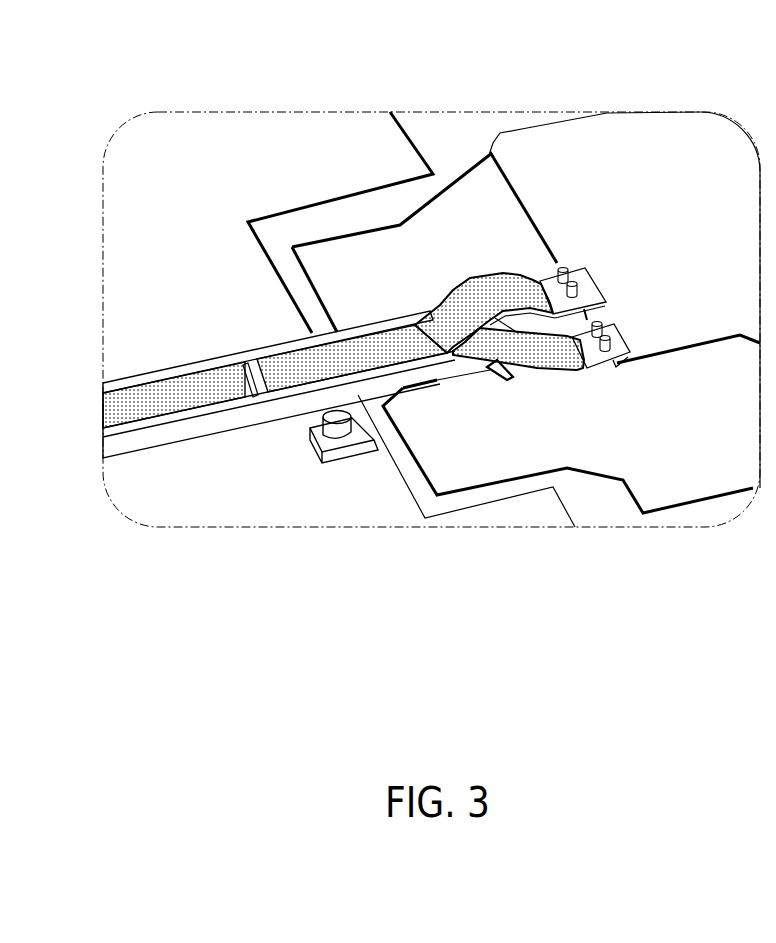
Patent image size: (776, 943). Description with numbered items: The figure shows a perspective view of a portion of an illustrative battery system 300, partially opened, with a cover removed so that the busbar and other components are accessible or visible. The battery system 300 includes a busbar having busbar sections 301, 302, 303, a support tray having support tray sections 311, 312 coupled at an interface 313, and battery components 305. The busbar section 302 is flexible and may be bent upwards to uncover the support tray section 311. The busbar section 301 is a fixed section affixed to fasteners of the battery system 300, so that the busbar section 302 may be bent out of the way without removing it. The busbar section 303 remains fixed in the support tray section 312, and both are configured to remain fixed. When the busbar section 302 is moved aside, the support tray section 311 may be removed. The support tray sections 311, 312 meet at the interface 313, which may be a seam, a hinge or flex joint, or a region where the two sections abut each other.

The battery system 300 is at (302, 161).
The busbar section 301 is at (549, 268).
The busbar section 302 is at (268, 378).
The busbar section 303 is at (138, 407).
The battery components 305 is at (373, 442).
The support tray section 311 is at (428, 368).
The support tray section 312 is at (215, 428).
The interface 313 is at (268, 394).